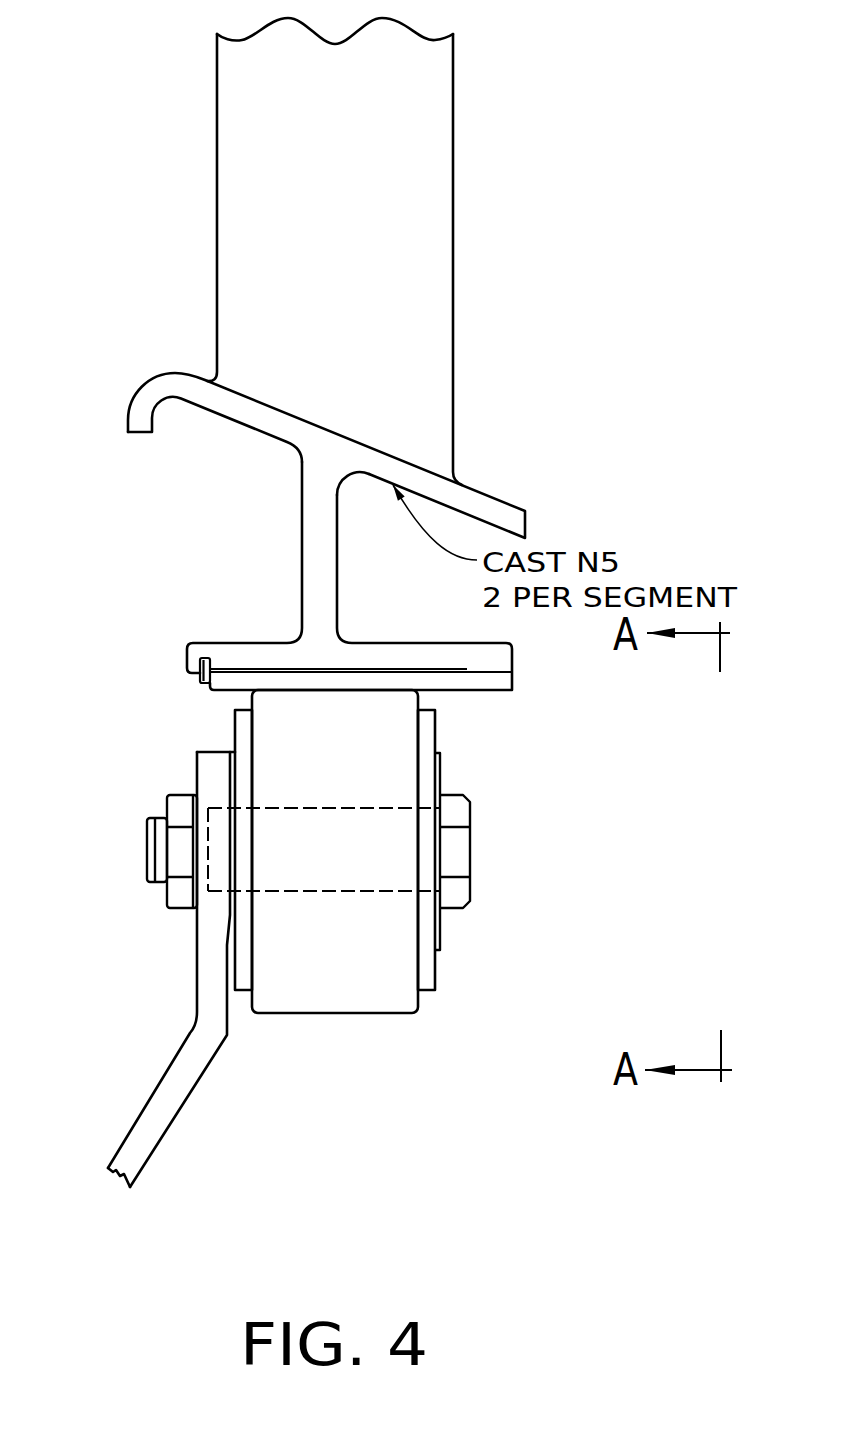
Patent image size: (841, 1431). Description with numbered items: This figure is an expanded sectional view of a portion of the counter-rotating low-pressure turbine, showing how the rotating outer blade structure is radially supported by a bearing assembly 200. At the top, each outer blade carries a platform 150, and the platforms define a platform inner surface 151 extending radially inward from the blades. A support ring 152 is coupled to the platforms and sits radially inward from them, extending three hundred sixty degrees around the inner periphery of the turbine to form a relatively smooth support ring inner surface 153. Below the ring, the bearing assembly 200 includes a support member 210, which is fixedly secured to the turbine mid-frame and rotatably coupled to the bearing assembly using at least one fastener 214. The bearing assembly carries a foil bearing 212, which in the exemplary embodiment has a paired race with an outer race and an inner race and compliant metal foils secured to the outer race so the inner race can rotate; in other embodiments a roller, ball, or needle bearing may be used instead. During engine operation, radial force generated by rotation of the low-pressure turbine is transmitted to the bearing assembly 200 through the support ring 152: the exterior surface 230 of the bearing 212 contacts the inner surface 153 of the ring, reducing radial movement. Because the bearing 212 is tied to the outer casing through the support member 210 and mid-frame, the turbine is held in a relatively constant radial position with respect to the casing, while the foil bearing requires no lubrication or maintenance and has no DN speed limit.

The platform 150 is at (185, 666).
The platform inner surface 151 is at (468, 673).
The support ring 152 is at (512, 680).
The support ring inner surface 153 is at (470, 692).
The bearing assembly 200 is at (489, 795).
The support member 210 is at (163, 1107).
The foil bearing 212 is at (335, 1015).
The fastener 214 is at (183, 910).
The exterior surface 230 is at (237, 689).